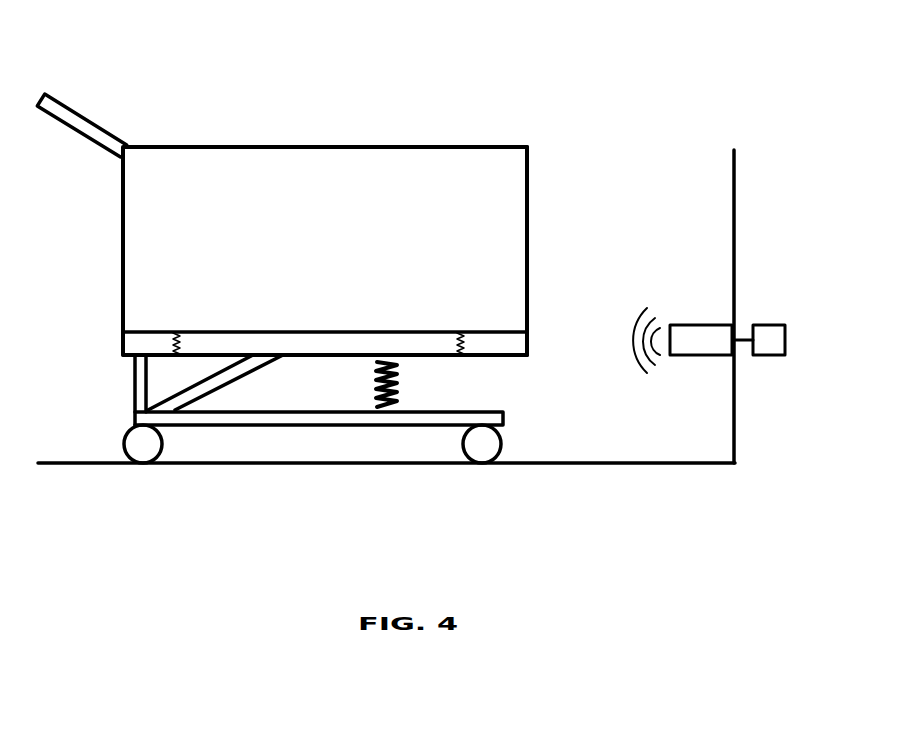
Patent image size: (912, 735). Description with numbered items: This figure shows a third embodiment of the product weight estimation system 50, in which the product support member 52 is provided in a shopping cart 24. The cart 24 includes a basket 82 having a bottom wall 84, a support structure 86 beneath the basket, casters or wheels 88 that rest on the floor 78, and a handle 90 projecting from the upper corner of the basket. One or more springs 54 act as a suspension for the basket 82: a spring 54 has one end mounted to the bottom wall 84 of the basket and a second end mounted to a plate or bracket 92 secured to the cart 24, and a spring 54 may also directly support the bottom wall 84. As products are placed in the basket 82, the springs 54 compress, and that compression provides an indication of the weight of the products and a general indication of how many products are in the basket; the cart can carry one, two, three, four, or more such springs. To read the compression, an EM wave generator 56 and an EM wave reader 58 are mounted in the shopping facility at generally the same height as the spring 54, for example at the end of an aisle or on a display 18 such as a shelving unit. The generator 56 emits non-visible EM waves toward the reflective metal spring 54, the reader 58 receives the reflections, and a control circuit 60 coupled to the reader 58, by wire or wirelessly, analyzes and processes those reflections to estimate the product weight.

The display 18 is at (745, 275).
The cart 24 is at (208, 145).
The system 50 is at (637, 182).
The product support member 52 is at (150, 330).
The spring 54 is at (173, 342).
The EM wave generator 56 is at (682, 322).
The EM wave reader 58 is at (703, 323).
The control circuit 60 is at (773, 323).
The floor 78 is at (48, 465).
The basket 82 is at (506, 146).
The bottom wall 84 is at (493, 330).
The support structure 86 is at (132, 390).
The wheel 88 is at (153, 465).
The handle 90 is at (73, 108).
The plate or bracket 92 is at (500, 356).